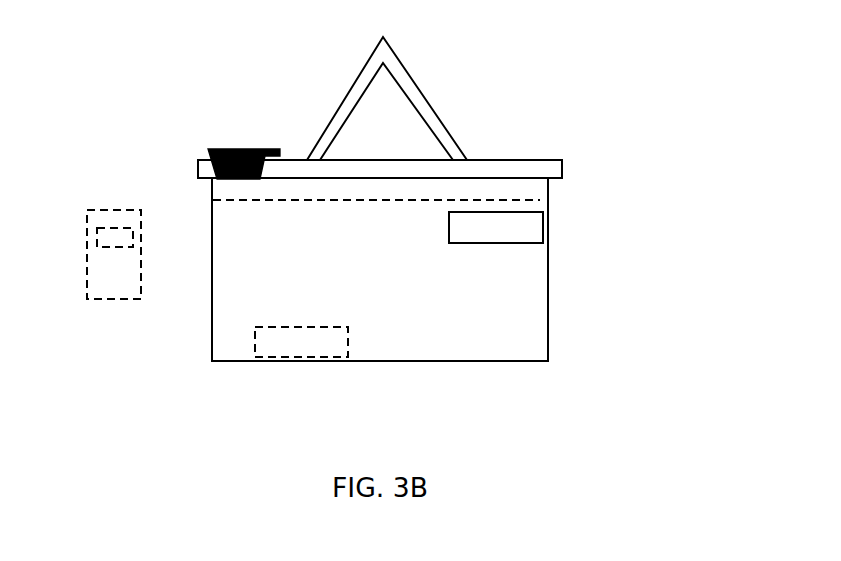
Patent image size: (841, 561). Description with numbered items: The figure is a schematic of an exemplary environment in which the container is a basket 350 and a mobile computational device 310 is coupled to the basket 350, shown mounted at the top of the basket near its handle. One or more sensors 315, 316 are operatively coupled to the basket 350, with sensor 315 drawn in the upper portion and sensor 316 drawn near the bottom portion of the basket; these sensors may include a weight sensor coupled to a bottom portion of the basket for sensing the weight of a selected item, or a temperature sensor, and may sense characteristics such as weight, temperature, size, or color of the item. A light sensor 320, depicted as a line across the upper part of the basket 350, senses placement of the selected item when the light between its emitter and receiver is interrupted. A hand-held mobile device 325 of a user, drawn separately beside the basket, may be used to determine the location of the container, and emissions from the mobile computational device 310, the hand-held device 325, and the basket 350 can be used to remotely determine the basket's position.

The mobile computational device 310 is at (233, 144).
The sensor 315 is at (496, 227).
The sensor 316 is at (301, 342).
The light sensor 320 is at (504, 193).
The hand-held mobile device 325 is at (111, 208).
The basket 350 is at (574, 267).